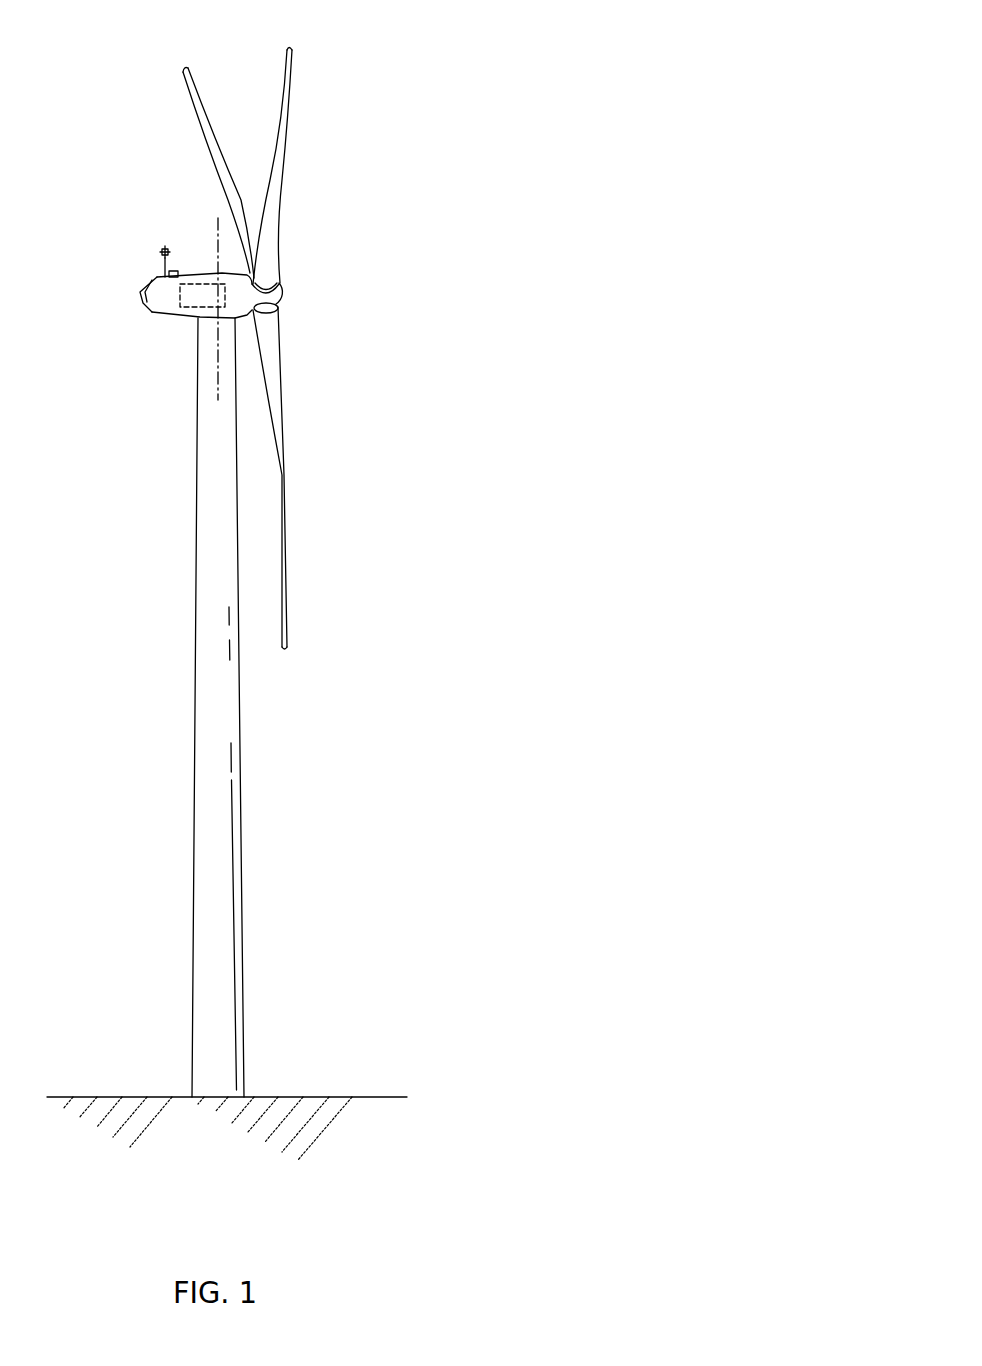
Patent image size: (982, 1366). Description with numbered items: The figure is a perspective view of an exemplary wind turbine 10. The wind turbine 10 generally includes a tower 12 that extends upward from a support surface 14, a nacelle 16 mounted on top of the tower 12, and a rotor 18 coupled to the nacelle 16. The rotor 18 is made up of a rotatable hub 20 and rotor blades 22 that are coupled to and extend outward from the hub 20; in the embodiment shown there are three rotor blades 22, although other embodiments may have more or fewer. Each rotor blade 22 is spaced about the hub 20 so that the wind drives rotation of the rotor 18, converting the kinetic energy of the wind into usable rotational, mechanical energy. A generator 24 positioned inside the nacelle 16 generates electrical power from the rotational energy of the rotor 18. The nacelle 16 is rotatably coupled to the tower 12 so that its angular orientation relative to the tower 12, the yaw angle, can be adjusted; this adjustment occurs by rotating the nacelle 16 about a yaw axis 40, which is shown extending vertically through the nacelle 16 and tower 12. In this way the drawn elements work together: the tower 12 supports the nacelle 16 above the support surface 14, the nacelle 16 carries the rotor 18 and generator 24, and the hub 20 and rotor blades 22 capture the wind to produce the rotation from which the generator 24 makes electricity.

The wind turbine 10 is at (567, 115).
The tower 12 is at (207, 817).
The support surface 14 is at (127, 1097).
The nacelle 16 is at (180, 318).
The rotor 18 is at (293, 272).
The rotatable hub 20 is at (287, 297).
The rotor blade 22 is at (282, 87).
The generator 24 is at (200, 283).
The yaw axis 40 is at (217, 377).